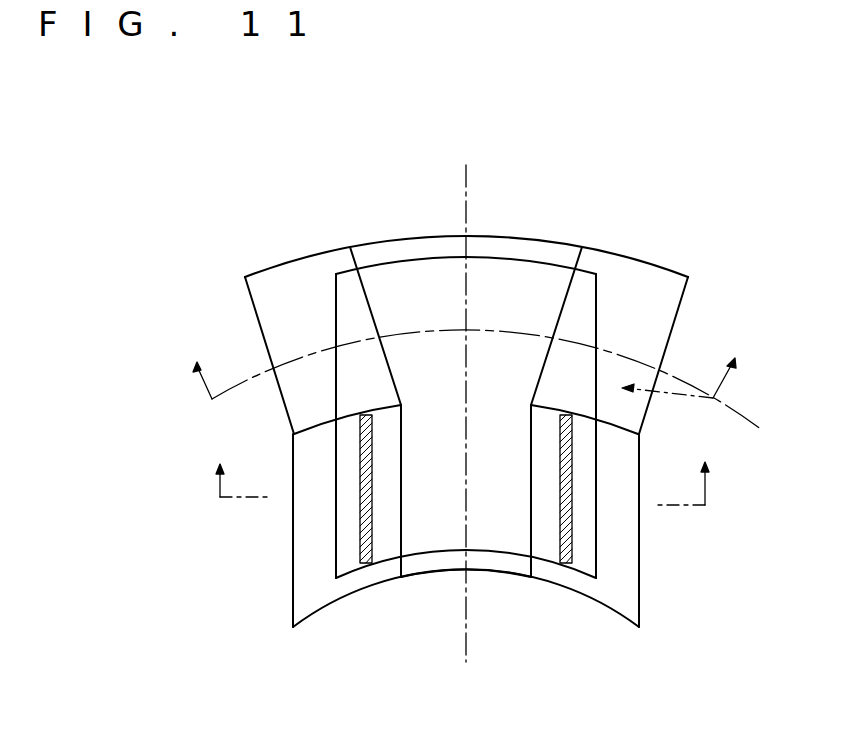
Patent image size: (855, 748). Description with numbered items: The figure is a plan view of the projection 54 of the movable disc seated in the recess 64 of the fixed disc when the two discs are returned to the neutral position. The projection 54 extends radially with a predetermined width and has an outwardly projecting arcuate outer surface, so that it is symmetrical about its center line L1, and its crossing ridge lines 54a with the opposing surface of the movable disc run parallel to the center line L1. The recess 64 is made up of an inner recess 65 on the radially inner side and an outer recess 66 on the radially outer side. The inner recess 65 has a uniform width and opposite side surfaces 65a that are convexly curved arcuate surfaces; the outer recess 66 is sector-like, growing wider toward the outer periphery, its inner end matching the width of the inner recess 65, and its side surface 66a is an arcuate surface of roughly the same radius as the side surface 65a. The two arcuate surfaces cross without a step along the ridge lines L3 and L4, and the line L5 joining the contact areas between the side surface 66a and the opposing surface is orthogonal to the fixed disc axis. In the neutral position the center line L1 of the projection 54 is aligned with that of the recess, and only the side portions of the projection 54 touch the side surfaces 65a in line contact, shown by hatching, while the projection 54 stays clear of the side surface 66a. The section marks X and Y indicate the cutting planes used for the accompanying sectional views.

The projection 54 is at (434, 236).
The crossing ridge lines 54a is at (335, 316).
The outer recess 66 is at (532, 250).
The side surface 66a is at (295, 293).
The recess 64 is at (509, 393).
The inner recess 65 is at (496, 566).
The opposite side surfaces 65a is at (314, 543).
The center line L1 is at (462, 628).
The crossing ridge line L3 is at (323, 421).
The crossing ridge line L4 is at (610, 421).
The line connecting contact areas L5 is at (248, 302).
The X axis X is at (464, 485).
The Y axis Y is at (466, 381).